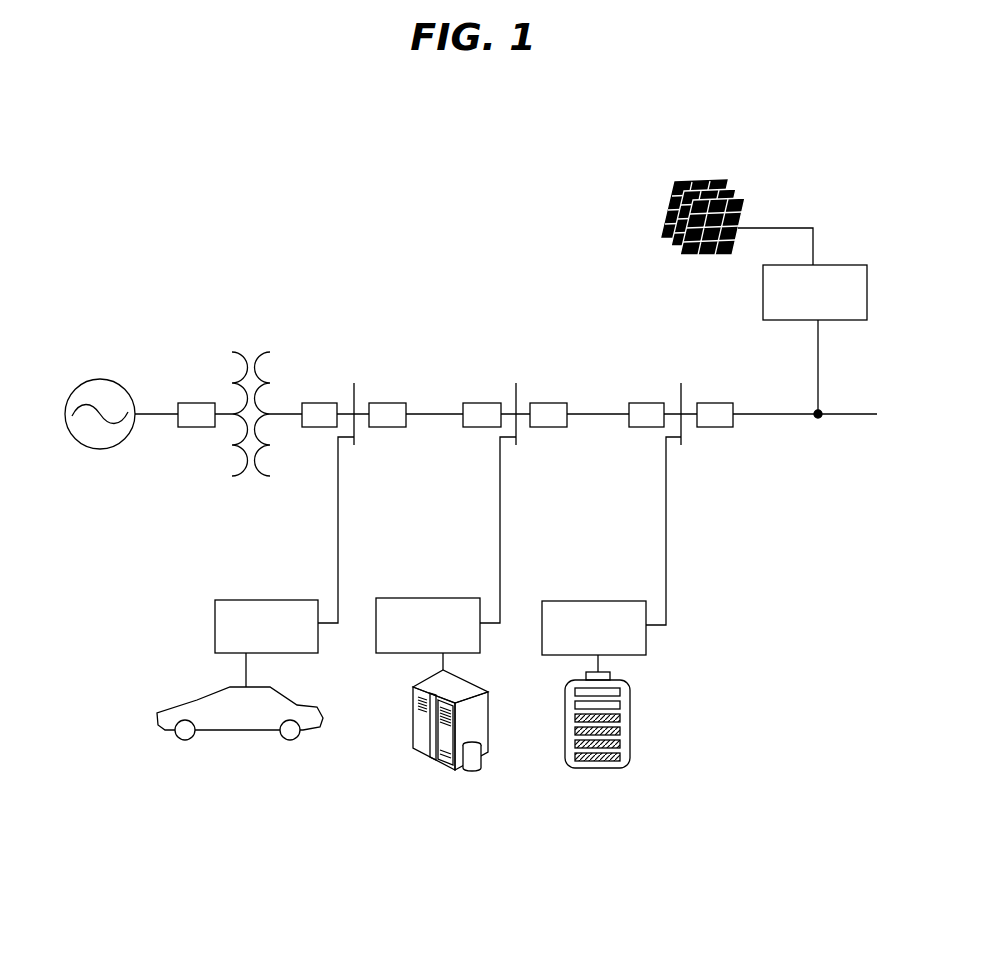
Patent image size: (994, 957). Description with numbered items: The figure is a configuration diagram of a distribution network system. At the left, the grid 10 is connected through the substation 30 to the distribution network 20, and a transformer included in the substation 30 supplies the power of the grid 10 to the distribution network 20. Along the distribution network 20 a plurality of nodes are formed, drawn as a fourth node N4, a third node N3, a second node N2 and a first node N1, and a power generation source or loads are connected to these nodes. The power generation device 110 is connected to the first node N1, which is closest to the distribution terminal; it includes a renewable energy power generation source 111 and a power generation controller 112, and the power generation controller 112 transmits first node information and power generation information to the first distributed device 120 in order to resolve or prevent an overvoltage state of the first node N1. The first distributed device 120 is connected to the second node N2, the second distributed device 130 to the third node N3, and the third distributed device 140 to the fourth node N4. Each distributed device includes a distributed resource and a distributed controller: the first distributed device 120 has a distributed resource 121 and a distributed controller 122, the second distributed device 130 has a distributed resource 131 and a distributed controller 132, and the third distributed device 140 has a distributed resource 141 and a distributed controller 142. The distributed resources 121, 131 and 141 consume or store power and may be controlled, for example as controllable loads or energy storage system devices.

The grid 10 is at (100, 380).
The distribution network 20 is at (771, 424).
The substation 30 is at (256, 348).
The power generation device 110 is at (774, 209).
The renewable energy power generation source 111 is at (708, 196).
The power generation controller 112 is at (858, 265).
The first distributed device 120 is at (665, 698).
The distributed resource 121 is at (632, 752).
The distributed controller 122 is at (648, 640).
The second distributed device 130 is at (442, 744).
The distributed resource 131 is at (483, 755).
The distributed controller 132 is at (378, 655).
The third distributed device 140 is at (192, 700).
The distributed resource 141 is at (216, 735).
The distributed controller 142 is at (215, 610).
The first node N1 is at (822, 386).
The second node N2 is at (670, 488).
The third node N3 is at (505, 487).
The fourth node N4 is at (344, 487).